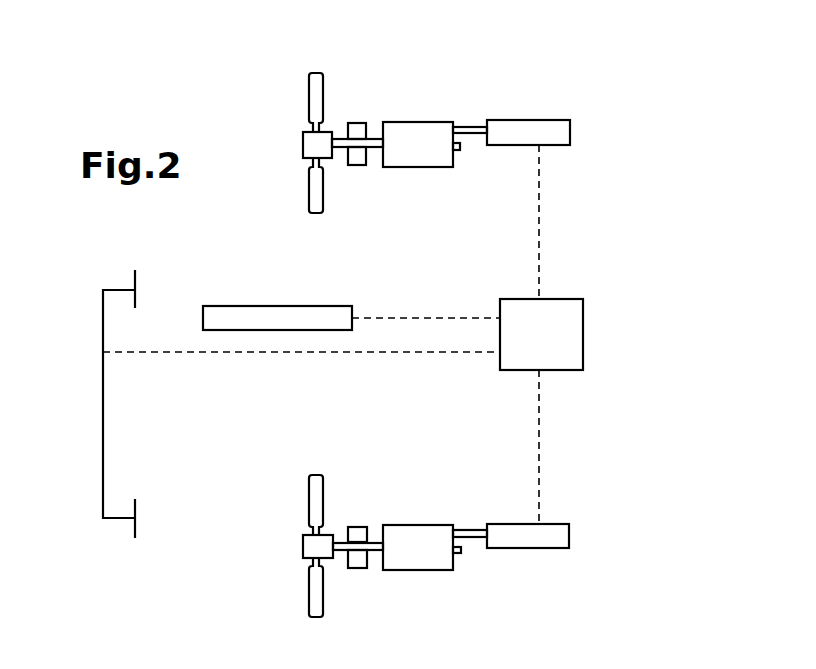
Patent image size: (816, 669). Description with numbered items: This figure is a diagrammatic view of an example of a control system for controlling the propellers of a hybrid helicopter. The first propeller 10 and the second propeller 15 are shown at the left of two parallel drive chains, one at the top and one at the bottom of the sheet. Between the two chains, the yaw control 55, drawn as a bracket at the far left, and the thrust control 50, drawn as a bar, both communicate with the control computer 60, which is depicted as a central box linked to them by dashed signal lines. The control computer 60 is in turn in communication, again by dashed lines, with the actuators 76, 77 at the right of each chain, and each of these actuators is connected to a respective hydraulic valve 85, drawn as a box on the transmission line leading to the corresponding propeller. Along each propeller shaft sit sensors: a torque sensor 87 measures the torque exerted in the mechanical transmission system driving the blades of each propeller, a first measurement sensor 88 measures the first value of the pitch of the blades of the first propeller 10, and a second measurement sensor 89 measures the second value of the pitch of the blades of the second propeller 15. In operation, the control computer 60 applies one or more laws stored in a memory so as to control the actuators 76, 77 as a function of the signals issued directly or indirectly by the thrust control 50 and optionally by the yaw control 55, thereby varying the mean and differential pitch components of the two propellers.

The first propeller 10 is at (312, 578).
The second propeller 15 is at (316, 89).
The thrust control 50 is at (252, 306).
The yaw control 55 is at (103, 434).
The control computer 60 is at (541, 334).
The actuator 76 is at (551, 540).
The actuator 77 is at (522, 120).
The hydraulic valve 85 is at (418, 346).
The torque sensor 87 is at (355, 123).
The first measurement sensor 88 is at (355, 527).
The second measurement sensor 89 is at (355, 165).